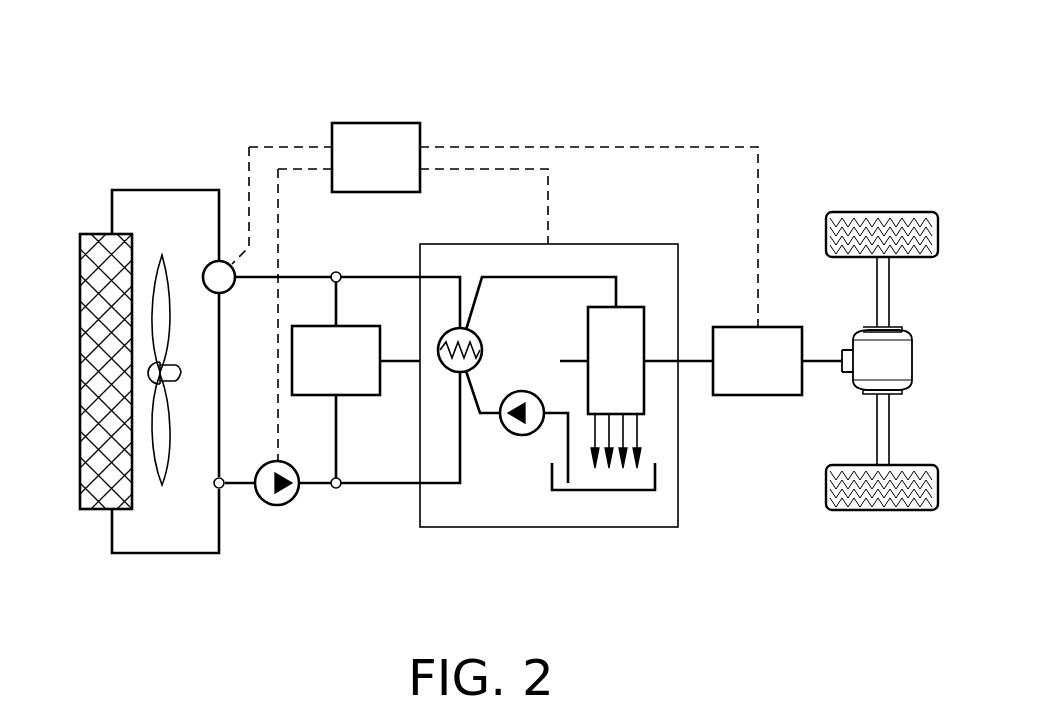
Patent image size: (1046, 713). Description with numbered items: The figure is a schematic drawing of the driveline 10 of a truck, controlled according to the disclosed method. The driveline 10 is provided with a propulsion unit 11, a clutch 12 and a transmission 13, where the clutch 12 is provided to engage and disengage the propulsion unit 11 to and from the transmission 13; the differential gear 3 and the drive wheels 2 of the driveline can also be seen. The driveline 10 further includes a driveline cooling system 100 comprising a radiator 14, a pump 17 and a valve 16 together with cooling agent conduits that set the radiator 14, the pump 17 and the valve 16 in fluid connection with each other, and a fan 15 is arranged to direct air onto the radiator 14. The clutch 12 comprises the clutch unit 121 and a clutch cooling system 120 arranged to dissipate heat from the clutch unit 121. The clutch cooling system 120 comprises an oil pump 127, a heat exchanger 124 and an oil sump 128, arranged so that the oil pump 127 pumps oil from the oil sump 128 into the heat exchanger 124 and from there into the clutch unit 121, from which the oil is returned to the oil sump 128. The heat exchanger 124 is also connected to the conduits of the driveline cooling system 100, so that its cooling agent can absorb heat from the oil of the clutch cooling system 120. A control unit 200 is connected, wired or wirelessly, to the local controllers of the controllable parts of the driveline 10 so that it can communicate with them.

The driveline 10 is at (224, 58).
The driveline cooling system 100 is at (226, 590).
The radiator 14 is at (93, 234).
The fan 15 is at (153, 260).
The valve 16 is at (206, 262).
The pump 17 is at (282, 506).
The propulsion unit 11 is at (365, 395).
The control unit 200 is at (373, 121).
The clutch cooling system 120 is at (503, 228).
The clutch unit 121 is at (628, 307).
The heat exchanger 124 is at (483, 365).
The oil pump 127 is at (528, 436).
The oil sump 128 is at (618, 490).
The clutch 12 is at (640, 527).
The transmission 13 is at (760, 395).
The differential gear 3 is at (857, 388).
The drive wheels 2 is at (882, 212).